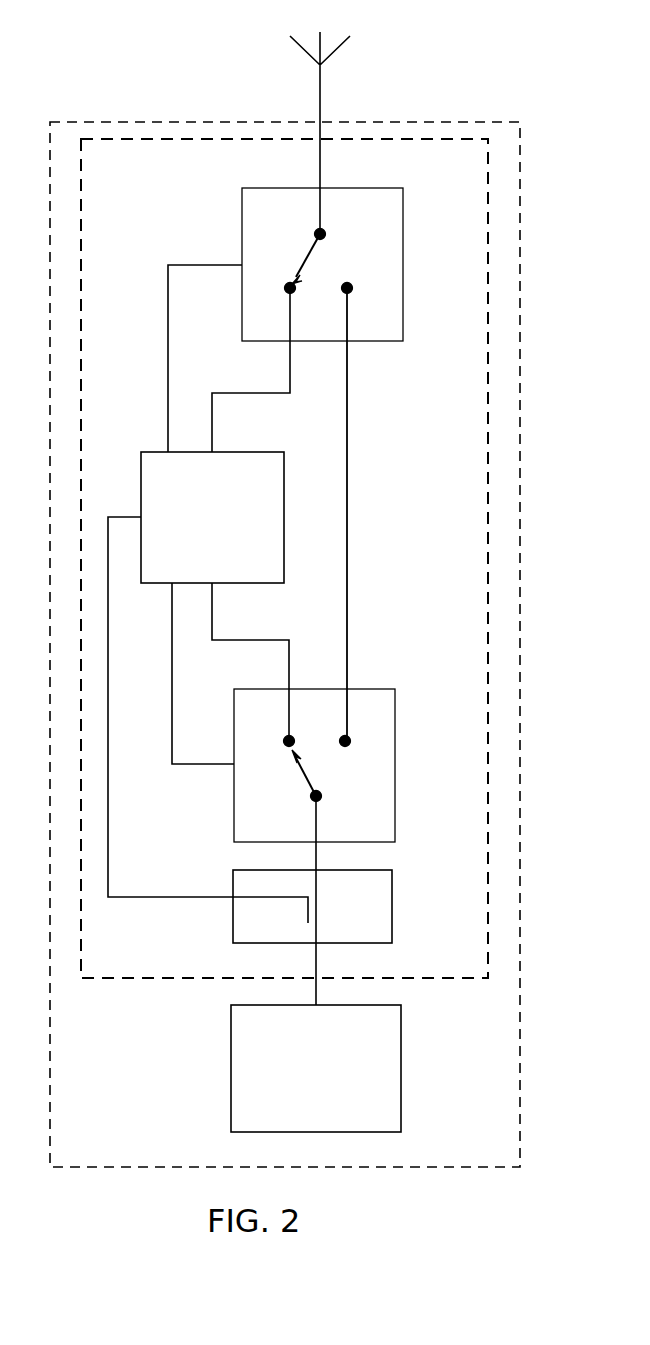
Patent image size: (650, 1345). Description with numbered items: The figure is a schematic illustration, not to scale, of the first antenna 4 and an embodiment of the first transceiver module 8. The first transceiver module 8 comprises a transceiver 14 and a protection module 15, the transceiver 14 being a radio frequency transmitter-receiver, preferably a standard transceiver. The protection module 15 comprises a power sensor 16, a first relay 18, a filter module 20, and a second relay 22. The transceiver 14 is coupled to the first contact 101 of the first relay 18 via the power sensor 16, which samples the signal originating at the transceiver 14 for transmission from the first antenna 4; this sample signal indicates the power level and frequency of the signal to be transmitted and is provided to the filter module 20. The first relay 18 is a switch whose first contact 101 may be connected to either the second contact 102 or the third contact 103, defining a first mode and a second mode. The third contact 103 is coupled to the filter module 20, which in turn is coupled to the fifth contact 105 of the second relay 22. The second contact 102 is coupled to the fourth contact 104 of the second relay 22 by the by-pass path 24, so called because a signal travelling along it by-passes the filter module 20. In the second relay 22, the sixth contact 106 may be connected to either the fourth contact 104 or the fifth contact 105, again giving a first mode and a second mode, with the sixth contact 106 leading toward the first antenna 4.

The first antenna 4 is at (320, 90).
The first transceiver module 8 is at (520, 362).
The protection module 15 is at (488, 215).
The second relay 22 is at (403, 206).
The sixth contact 106 is at (312, 236).
The fifth contact 105 is at (288, 291).
The fourth contact 104 is at (349, 291).
The by-pass path 24 is at (348, 515).
The filter module 20 is at (212, 517).
The first relay 18 is at (395, 706).
The third contact 103 is at (289, 741).
The second contact 102 is at (345, 740).
The first contact 101 is at (318, 797).
The power sensor 16 is at (392, 908).
The transceiver 14 is at (316, 1068).